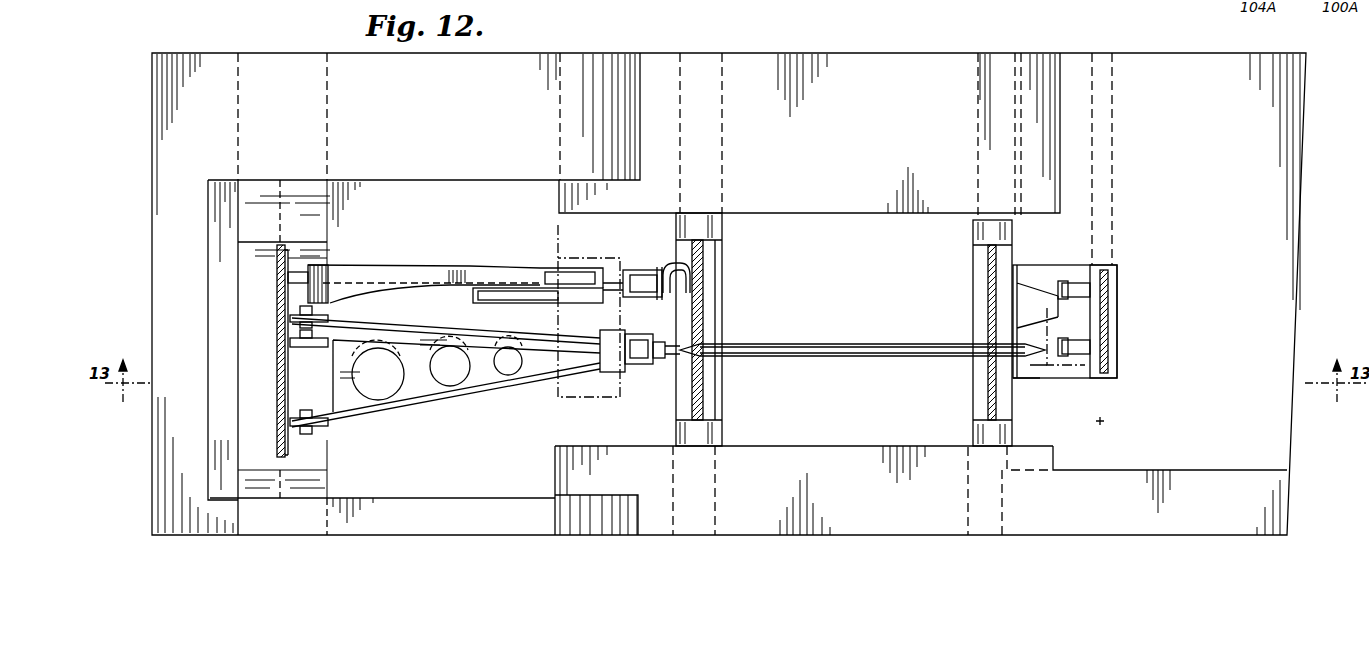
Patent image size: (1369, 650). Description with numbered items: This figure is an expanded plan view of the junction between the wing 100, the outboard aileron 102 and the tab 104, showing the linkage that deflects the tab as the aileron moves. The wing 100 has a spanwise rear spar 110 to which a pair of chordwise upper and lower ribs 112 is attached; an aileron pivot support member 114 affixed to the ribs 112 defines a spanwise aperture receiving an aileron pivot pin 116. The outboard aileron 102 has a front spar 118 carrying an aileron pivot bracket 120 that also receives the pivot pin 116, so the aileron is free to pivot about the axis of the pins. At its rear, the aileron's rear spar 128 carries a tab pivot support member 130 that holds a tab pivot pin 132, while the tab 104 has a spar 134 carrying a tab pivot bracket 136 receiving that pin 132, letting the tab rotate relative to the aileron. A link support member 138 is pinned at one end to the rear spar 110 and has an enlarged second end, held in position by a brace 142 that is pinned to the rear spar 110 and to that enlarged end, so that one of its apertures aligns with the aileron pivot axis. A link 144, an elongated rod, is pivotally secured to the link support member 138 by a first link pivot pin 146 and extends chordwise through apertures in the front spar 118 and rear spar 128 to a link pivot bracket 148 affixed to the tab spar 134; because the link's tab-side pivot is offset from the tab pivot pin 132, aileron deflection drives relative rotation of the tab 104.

The wing 100 is at (483, 118).
The outboard aileron 102 is at (870, 143).
The tab 104 is at (1235, 135).
The rear spar 110 is at (312, 213).
The upper and lower ribs 112 is at (438, 277).
The aileron pivot support member 114 is at (602, 300).
The aileron pivot pin 116 is at (647, 270).
The front spar 118 is at (714, 231).
The aileron pivot bracket 120 is at (692, 266).
The rear spar 128 is at (973, 236).
The tab pivot support member 130 is at (1037, 288).
The tab pivot pin 132 is at (1075, 275).
The spar 134 is at (1100, 421).
The tab pivot bracket 136 is at (1095, 287).
The link support member 138 is at (415, 328).
The brace 142 is at (420, 350).
The link 144 is at (805, 347).
The first link pivot pin 146 is at (643, 370).
The link pivot bracket 148 is at (1077, 368).